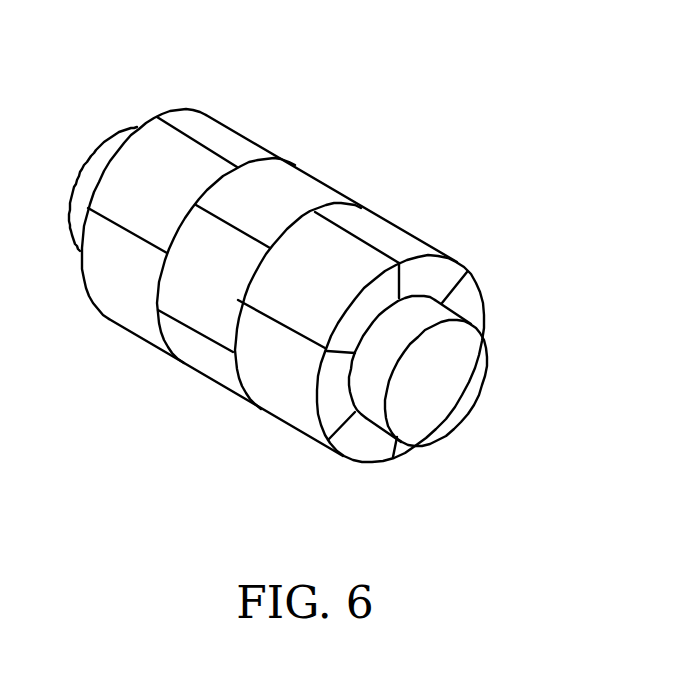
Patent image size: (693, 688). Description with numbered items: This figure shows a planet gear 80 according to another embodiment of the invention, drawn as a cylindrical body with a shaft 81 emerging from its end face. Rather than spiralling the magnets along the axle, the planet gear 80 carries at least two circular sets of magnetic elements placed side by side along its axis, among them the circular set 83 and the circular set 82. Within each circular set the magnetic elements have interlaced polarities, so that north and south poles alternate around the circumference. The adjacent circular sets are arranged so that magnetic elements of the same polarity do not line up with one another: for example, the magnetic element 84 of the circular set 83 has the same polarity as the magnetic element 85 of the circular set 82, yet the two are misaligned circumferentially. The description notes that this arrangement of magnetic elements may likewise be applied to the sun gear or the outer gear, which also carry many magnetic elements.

The planet gear 80 is at (505, 82).
The shaft 81 is at (450, 387).
The circular set 82 is at (460, 229).
The circular set 83 is at (342, 155).
The magnetic element 84 is at (267, 173).
The magnetic element 85 is at (357, 253).